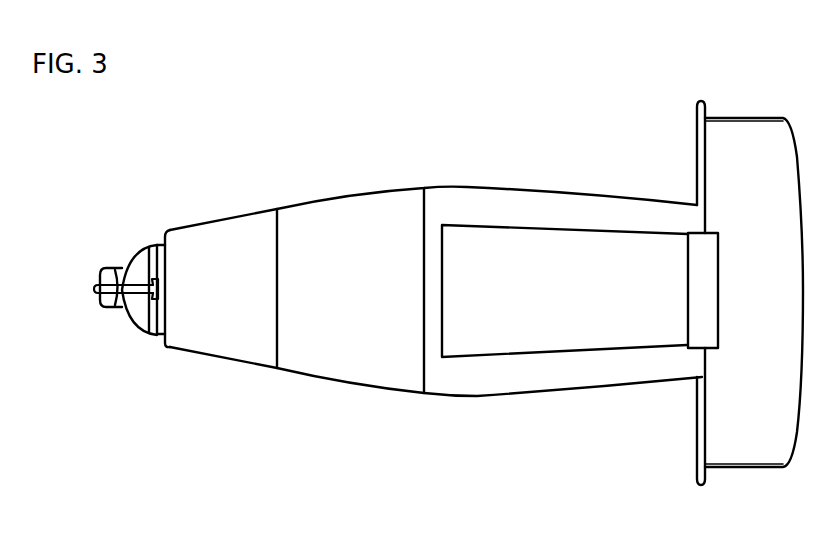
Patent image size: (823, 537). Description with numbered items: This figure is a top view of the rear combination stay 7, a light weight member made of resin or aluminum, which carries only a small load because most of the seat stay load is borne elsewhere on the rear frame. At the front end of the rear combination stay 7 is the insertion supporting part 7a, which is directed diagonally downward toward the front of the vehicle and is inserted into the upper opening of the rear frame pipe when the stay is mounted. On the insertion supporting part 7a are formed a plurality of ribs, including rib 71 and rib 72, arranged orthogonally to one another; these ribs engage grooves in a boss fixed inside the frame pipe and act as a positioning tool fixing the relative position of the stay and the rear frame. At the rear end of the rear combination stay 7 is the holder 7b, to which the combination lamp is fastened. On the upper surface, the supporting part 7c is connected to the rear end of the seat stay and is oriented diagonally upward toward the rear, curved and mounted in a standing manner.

The rear combination stay 7 is at (468, 176).
The insertion supporting part 7a is at (100, 307).
The holder 7b is at (748, 116).
The supporting part 7c is at (552, 332).
The rib 71 is at (93, 287).
The rib 72 is at (107, 267).